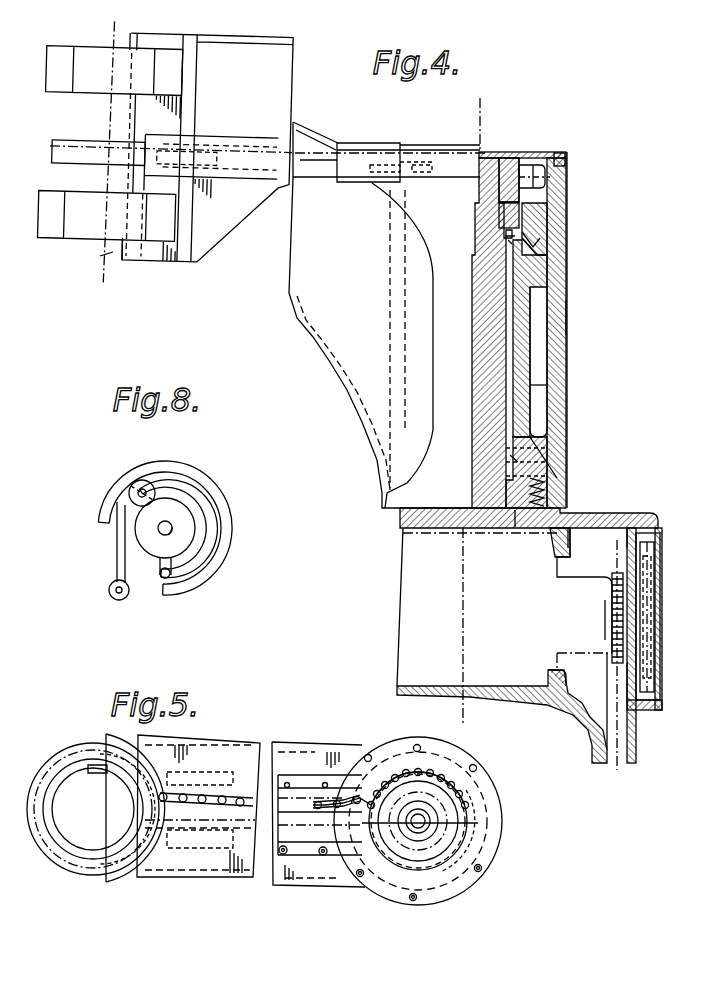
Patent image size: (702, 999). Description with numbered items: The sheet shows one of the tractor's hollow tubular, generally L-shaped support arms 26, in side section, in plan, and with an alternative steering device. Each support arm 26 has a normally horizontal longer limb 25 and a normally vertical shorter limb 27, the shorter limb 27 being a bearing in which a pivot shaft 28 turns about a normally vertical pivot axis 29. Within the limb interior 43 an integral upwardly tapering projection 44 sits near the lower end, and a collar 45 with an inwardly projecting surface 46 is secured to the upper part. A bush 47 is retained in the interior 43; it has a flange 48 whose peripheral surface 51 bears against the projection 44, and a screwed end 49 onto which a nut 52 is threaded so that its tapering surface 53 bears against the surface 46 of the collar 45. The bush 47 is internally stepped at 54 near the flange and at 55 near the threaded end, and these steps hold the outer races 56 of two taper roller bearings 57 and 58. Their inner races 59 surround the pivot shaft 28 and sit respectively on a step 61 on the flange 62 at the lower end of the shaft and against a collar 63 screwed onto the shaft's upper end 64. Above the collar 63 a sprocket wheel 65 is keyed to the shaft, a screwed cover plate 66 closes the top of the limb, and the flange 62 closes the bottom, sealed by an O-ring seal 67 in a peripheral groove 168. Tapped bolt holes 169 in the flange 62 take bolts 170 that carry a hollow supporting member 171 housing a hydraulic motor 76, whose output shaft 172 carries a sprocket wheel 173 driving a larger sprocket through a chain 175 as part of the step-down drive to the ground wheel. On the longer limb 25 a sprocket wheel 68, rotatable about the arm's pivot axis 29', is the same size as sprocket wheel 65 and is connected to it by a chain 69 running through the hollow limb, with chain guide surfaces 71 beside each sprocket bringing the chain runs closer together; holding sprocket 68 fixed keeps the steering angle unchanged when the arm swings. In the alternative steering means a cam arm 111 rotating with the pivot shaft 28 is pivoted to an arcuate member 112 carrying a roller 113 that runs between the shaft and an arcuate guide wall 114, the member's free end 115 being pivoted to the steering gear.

In FIG. 4, the longer limb 25 is at (247, 43).
In FIG. 5, the longer limb 25 is at (323, 878).
In FIG. 4, the support arm 26 is at (322, 120).
In FIG. 4, the shorter limb 27 is at (574, 320).
In FIG. 4, the pivot shaft 28 is at (492, 338).
In FIG. 8, the pivot shaft 28 is at (170, 525).
In FIG. 5, the pivot shaft 28 is at (445, 815).
In FIG. 4, the pivot axis 29 is at (505, 117).
In FIG. 4, the pivot axis of the support arm 29' is at (85, 268).
In FIG. 4, the interior 43 is at (545, 388).
In FIG. 4, the upwardly tapering projection 44 is at (547, 445).
In FIG. 4, the collar 45 is at (562, 275).
In FIG. 4, the inwardly projecting surface 46 is at (533, 247).
In FIG. 4, the bush 47 is at (530, 345).
In FIG. 4, the flange 48 is at (530, 465).
In FIG. 4, the screwed end 49 is at (552, 233).
In FIG. 4, the peripheral surface 51 is at (548, 456).
In FIG. 4, the nut 52 is at (545, 183).
In FIG. 4, the tapering surface 53 is at (553, 253).
In FIG. 4, the internal step 54 is at (498, 522).
In FIG. 4, the internal step 55 is at (560, 222).
In FIG. 4, the outer races 56 is at (503, 268).
In FIG. 4, the taper roller bearing 57 is at (513, 467).
In FIG. 4, the taper roller bearing 58 is at (497, 217).
In FIG. 4, the inner races 59 is at (508, 242).
In FIG. 4, the step 61 is at (525, 525).
In FIG. 4, the flange 62 is at (553, 497).
In FIG. 4, the collar 63 is at (560, 200).
In FIG. 4, the upper end 64 is at (478, 188).
In FIG. 4, the sprocket wheel 65 is at (520, 165).
In FIG. 5, the sprocket wheel 65 is at (460, 790).
In FIG. 4, the cover plate 66 is at (503, 160).
In FIG. 5, the cover plate 66 is at (440, 835).
In FIG. 4, the O-ring seal 67 is at (575, 548).
In FIG. 4, the sprocket wheel 68 is at (78, 144).
In FIG. 5, the sprocket wheel 68 is at (92, 867).
In FIG. 4, the chain 69 is at (313, 160).
In FIG. 5, the chain 69 is at (226, 792).
In FIG. 4, the chain guide surfaces 71 is at (358, 162).
In FIG. 5, the chain guide surfaces 71 is at (195, 785).
In FIG. 4, the hydraulic motor 76 is at (618, 574).
In FIG. 8, the cam arm 111 is at (159, 578).
In FIG. 8, the arcuate member 112 is at (212, 538).
In FIG. 8, the roller 113 is at (140, 480).
In FIG. 8, the arcuate guide wall 114 is at (208, 578).
In FIG. 8, the free end 115 is at (108, 586).
In FIG. 4, the peripheral groove 168 is at (447, 537).
In FIG. 4, the tapped bolt holes 169 is at (537, 485).
In FIG. 4, the bolts 170 is at (533, 537).
In FIG. 4, the hollow supporting member 171 is at (622, 514).
In FIG. 4, the output shaft 172 is at (606, 613).
In FIG. 4, the sprocket wheel 173 is at (608, 648).
In FIG. 4, the chain 175 is at (610, 703).